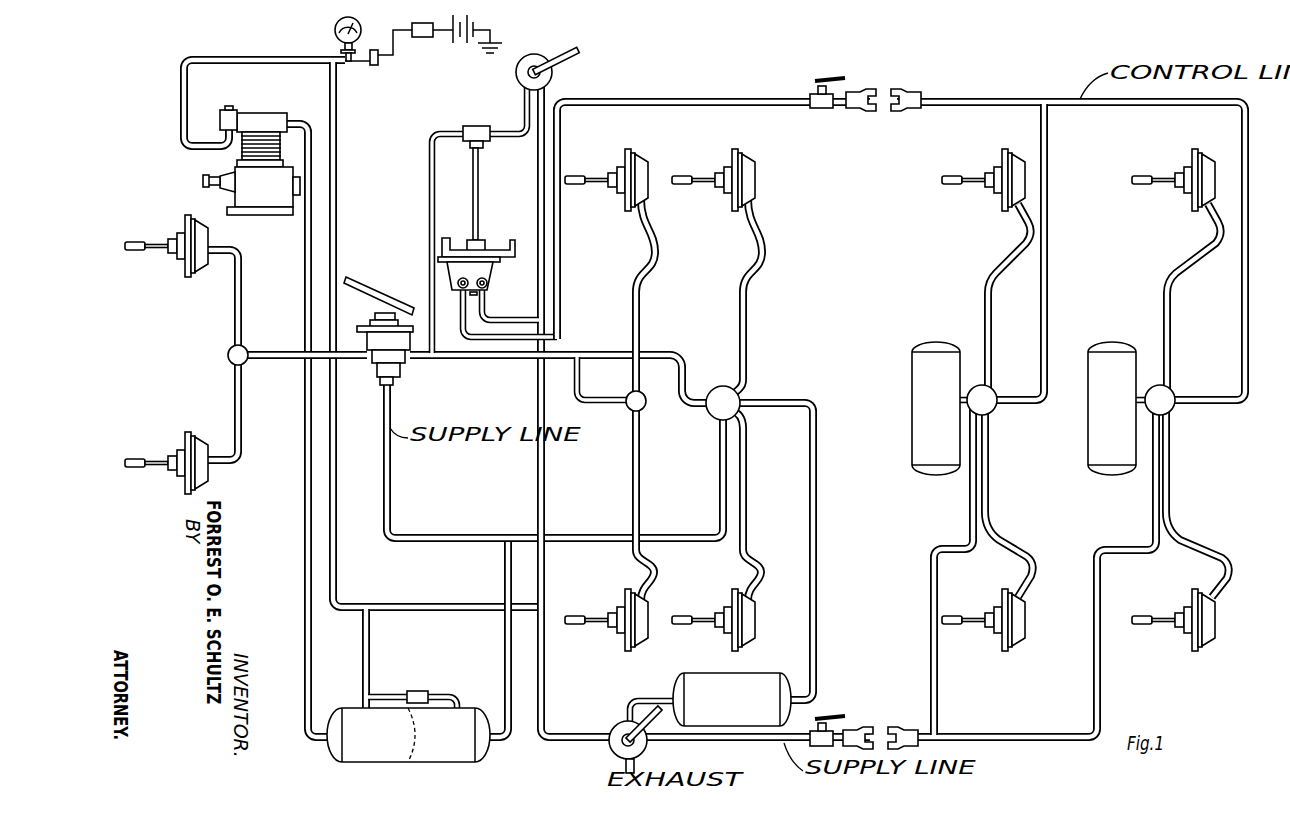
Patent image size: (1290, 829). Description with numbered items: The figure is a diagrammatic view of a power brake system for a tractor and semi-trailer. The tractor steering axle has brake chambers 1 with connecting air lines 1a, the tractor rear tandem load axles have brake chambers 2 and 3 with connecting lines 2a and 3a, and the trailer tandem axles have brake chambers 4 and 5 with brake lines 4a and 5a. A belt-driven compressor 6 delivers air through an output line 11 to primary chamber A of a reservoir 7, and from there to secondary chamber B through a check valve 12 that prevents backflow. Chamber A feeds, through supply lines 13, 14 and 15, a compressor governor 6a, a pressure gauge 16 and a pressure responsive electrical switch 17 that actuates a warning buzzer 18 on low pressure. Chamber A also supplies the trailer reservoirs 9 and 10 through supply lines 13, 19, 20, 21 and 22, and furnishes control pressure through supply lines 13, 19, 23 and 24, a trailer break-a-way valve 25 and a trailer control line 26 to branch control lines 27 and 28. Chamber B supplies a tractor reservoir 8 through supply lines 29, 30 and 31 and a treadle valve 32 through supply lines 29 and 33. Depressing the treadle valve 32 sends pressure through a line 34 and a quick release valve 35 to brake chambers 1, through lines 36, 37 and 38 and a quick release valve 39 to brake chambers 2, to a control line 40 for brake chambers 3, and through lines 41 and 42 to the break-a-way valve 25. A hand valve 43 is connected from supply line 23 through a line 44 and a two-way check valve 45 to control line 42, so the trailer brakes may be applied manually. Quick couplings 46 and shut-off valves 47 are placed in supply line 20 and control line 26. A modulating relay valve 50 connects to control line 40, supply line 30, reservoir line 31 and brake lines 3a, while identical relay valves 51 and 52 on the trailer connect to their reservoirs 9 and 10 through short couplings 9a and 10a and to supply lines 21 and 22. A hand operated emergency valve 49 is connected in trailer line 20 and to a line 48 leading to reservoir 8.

The brake chambers 1 is at (186, 270).
The connecting air lines 1a is at (243, 290).
The brake chambers 2 is at (648, 166).
The connecting lines 2a is at (657, 247).
The brake chambers 3 is at (758, 166).
The connecting lines 3a is at (768, 240).
The brake chambers 4 is at (1004, 162).
The brake lines 4a is at (1010, 258).
The brake chambers 5 is at (1195, 162).
The brake lines 5a is at (1205, 265).
The compressor 6 is at (270, 116).
The compressor governor 6a is at (230, 110).
The reservoir 7 is at (480, 752).
The single chamber reservoir 8 is at (730, 680).
The single chamber reservoir 9 is at (915, 402).
The short coupling 9a is at (968, 393).
The single chamber reservoir 10 is at (1102, 422).
The short coupling 10a is at (1150, 393).
The output line 11 is at (304, 258).
The check valve 12 is at (423, 692).
The supply line 13 is at (371, 660).
The supply line 14 is at (338, 463).
The supply line 15 is at (274, 58).
The pressure gauge 16 is at (336, 28).
The pressure responsive electrical switch 17 is at (374, 66).
The warning buzzer 18 is at (430, 38).
The supply line 19 is at (465, 605).
The supply line 20 is at (728, 742).
The supply line 21 is at (938, 688).
The supply line 22 is at (1100, 672).
The supply line 23 is at (547, 490).
The supply line 24 is at (512, 320).
The trailer break-a-way valve 25 is at (490, 252).
The trailer control line 26 is at (464, 312).
The branch control line 27 is at (1048, 222).
The branch control line 28 is at (1249, 213).
The supply line 29 is at (504, 650).
The supply line 30 is at (597, 540).
The reservoir line 31 is at (817, 524).
The treadle valve 32 is at (392, 300).
The supply line 33 is at (418, 538).
The line 34 is at (284, 352).
The quick release valve 35 is at (229, 352).
The line 36 is at (412, 360).
The line 37 is at (508, 358).
The line 38 is at (600, 402).
The quick release valve 39 is at (645, 408).
The control line 40 is at (655, 352).
The line 41 is at (428, 216).
The control line 42 is at (480, 196).
The hand valve 43 is at (538, 56).
The line 44 is at (513, 135).
The two-way check valve 45 is at (476, 128).
The quick couplings 46 is at (893, 88).
The shut-off valves 47 is at (822, 78).
The line 48 is at (655, 698).
The hand operated emergency valve 49 is at (614, 726).
The relay valve 50 is at (721, 386).
The relay valve 51 is at (991, 392).
The relay valve 52 is at (1170, 392).